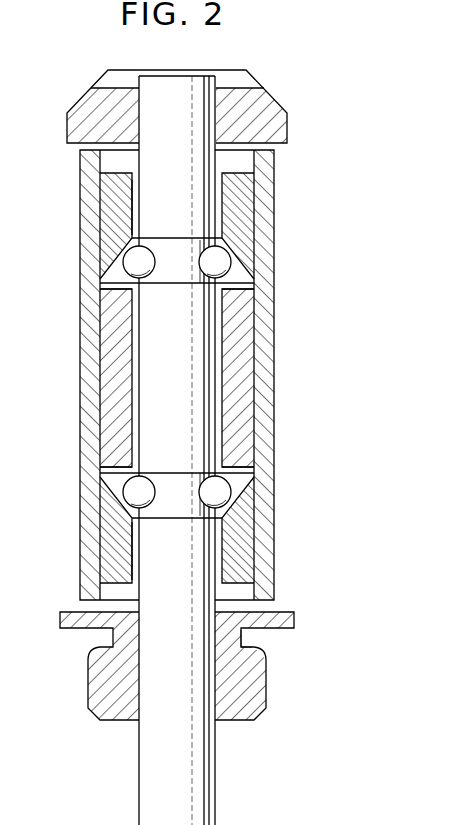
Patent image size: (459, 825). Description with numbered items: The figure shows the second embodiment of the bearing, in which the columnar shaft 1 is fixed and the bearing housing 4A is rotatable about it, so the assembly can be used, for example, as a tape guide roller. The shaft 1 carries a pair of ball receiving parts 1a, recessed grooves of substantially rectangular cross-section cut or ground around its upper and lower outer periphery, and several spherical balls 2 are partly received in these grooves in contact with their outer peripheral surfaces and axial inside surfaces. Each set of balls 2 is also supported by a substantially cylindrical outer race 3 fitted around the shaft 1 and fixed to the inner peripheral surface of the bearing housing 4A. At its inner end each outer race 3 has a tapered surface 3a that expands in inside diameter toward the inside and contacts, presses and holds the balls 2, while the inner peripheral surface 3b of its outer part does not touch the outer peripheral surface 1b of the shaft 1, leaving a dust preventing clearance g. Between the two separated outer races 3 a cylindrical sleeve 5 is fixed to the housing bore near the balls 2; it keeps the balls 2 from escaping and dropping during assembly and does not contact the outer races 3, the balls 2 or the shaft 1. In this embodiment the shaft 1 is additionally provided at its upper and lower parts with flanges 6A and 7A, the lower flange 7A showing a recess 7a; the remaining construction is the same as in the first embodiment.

The shaft 1 is at (181, 396).
The ball receiving parts 1a is at (201, 246).
The outer peripheral surface of the shaft 1b is at (212, 566).
The balls 2 is at (143, 285).
The outer races 3 is at (250, 205).
The tapered surface 3a is at (248, 283).
The inner peripheral surface 3b is at (135, 218).
The bearing housing 4A is at (80, 408).
The sleeve 5 is at (250, 358).
The flange 6A is at (287, 116).
The flange 7A is at (258, 697).
The annular recess of lower nut 7a is at (247, 641).
The dust preventing clearance g is at (135, 183).